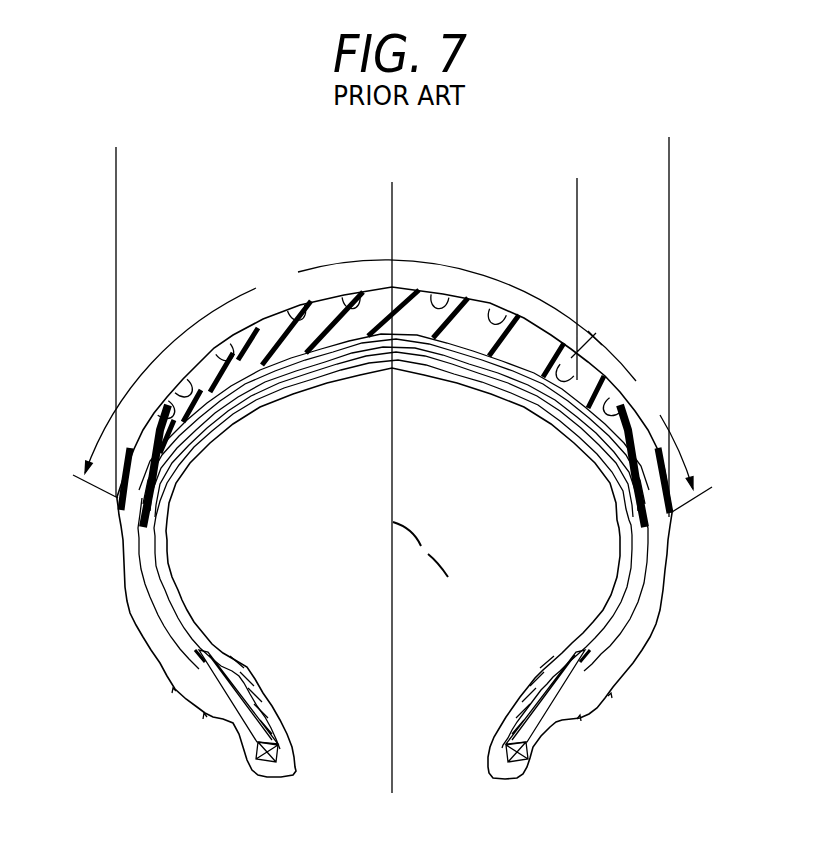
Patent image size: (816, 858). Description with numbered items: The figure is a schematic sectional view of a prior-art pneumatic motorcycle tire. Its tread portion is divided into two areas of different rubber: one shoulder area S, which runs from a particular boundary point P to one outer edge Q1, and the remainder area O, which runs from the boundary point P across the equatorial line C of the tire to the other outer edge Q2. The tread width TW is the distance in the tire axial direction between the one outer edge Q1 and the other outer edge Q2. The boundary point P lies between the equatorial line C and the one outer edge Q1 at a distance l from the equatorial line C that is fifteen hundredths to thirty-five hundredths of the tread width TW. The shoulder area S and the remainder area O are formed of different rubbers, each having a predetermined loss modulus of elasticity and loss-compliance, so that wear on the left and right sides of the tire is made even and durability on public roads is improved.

The tread width TW is at (669, 155).
The distance from tire equator to tread edge region l is at (577, 195).
The remainder area O is at (360, 366).
The shoulder area S is at (667, 439).
The boundary point P is at (548, 410).
The equatorial line C is at (423, 561).
The one outer edge Q1 is at (676, 510).
The other outer edge Q2 is at (118, 500).